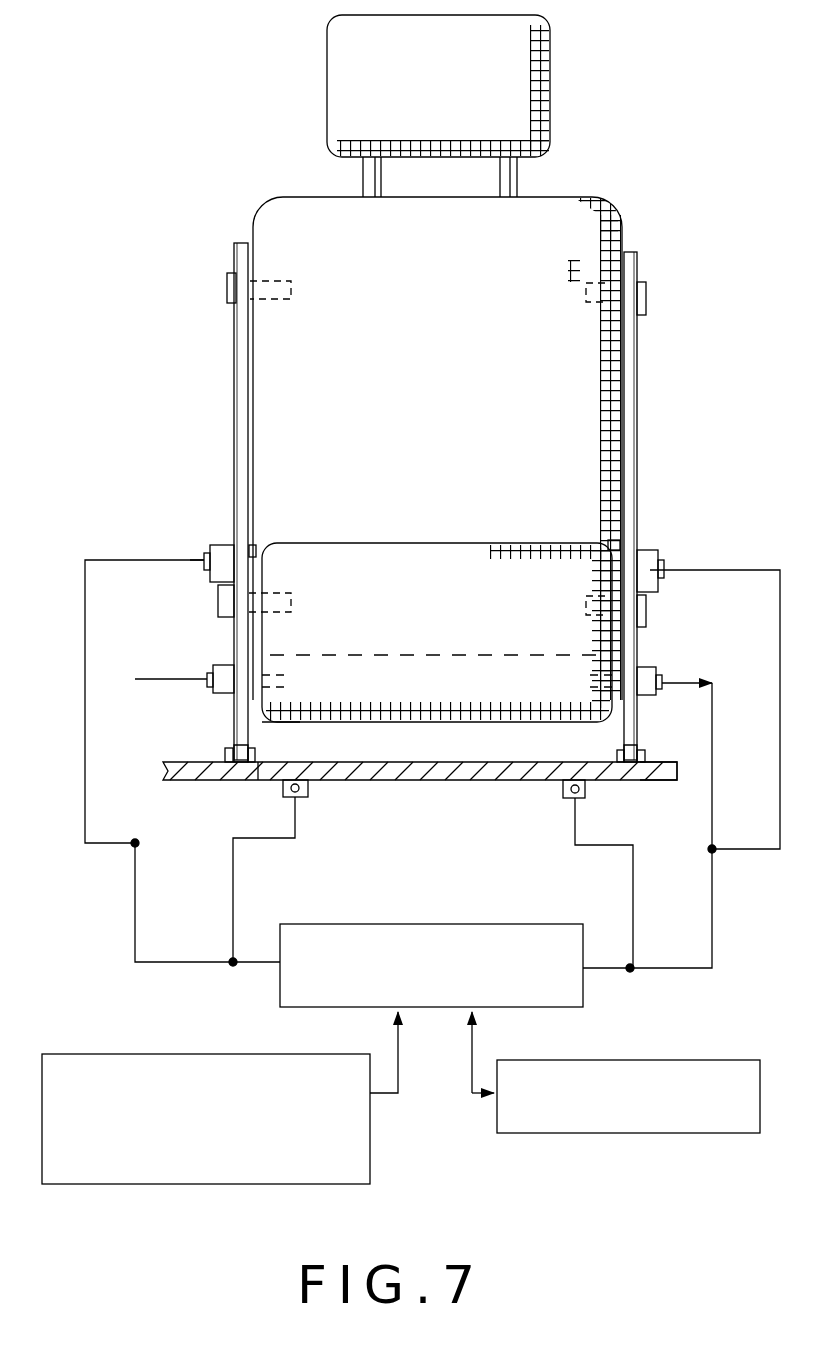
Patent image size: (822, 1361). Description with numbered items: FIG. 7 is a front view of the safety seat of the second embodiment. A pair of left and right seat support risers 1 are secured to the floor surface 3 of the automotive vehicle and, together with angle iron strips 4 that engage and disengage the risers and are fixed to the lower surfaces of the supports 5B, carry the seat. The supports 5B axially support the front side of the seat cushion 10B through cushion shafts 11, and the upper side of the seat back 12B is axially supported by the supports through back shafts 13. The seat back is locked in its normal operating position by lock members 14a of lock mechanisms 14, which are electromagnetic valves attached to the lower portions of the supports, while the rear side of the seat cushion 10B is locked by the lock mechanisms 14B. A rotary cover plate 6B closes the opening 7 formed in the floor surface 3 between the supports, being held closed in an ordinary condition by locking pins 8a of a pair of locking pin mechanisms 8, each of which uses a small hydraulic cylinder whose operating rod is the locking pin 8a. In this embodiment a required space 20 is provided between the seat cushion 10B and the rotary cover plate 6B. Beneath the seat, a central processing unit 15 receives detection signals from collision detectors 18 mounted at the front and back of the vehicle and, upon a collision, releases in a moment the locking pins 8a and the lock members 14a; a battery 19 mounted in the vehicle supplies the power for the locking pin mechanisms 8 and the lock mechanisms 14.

The seat back 12B is at (572, 200).
The seat cushion 10B is at (417, 541).
The supports 5B is at (239, 420).
The back shafts 13 is at (229, 285).
The lock mechanisms 14 is at (216, 544).
The lock members 14a is at (256, 545).
The cushion shafts 11 is at (217, 605).
The lock mechanisms 14B is at (212, 667).
The seat support risers 1 is at (228, 755).
The angle iron strip 4 is at (238, 764).
The floor surface 3 is at (664, 764).
The rotary cover plate 6B is at (455, 782).
The opening 7 is at (275, 782).
The required space 20 is at (416, 745).
The locking pin mechanisms 8 is at (308, 790).
The locking pins 8a is at (298, 800).
The central processing unit 15 is at (533, 924).
The collision detectors 18 is at (132, 1054).
The battery 19 is at (708, 1060).